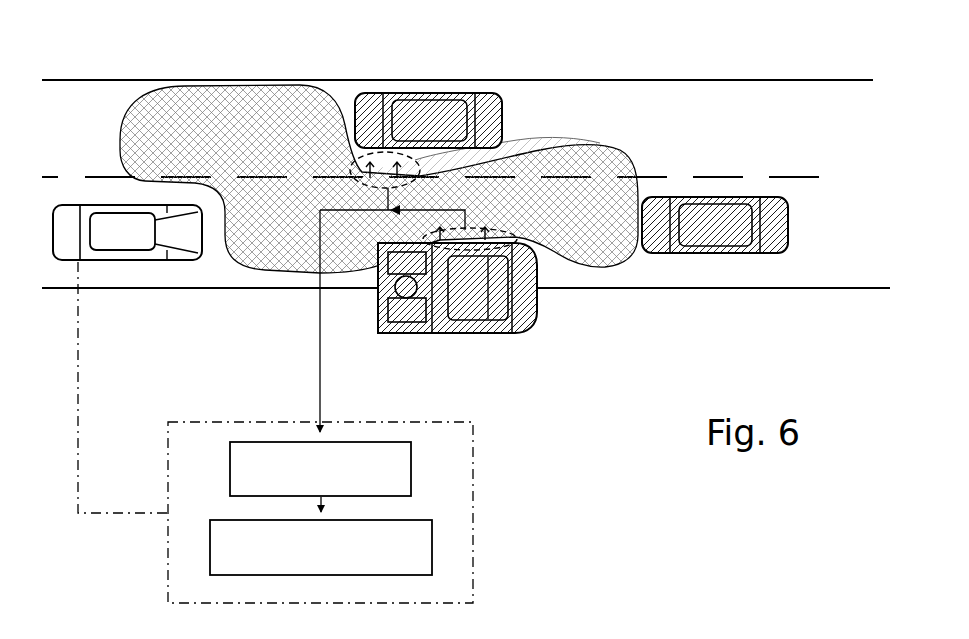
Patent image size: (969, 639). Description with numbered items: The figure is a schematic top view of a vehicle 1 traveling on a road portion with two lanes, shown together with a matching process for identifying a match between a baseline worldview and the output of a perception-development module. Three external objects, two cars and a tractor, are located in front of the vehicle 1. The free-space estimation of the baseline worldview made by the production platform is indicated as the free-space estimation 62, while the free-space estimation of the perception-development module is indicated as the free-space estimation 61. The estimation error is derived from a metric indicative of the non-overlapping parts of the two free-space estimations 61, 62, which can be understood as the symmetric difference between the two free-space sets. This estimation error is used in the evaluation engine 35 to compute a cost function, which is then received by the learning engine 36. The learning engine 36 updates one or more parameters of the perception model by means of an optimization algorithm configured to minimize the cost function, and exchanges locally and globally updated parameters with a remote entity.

The vehicle 1 is at (150, 262).
The evaluation engine 35 is at (411, 453).
The learning engine 36 is at (432, 548).
The free-space estimation of the perception-development module 61 is at (630, 150).
The free-space estimation of the baseline worldview 62 is at (530, 148).